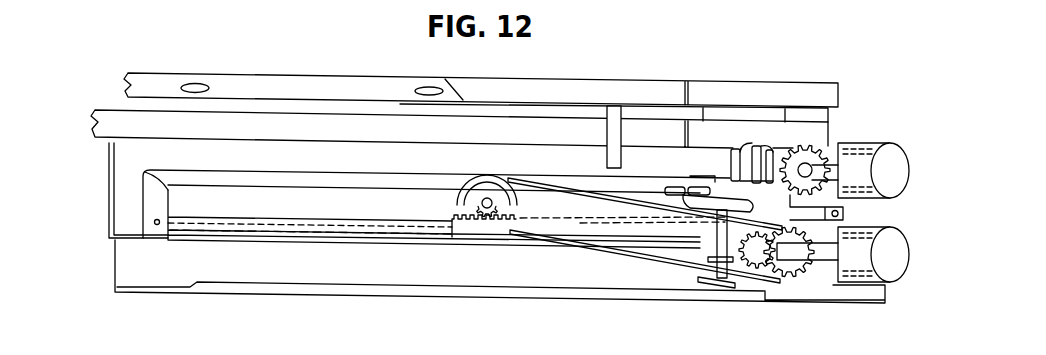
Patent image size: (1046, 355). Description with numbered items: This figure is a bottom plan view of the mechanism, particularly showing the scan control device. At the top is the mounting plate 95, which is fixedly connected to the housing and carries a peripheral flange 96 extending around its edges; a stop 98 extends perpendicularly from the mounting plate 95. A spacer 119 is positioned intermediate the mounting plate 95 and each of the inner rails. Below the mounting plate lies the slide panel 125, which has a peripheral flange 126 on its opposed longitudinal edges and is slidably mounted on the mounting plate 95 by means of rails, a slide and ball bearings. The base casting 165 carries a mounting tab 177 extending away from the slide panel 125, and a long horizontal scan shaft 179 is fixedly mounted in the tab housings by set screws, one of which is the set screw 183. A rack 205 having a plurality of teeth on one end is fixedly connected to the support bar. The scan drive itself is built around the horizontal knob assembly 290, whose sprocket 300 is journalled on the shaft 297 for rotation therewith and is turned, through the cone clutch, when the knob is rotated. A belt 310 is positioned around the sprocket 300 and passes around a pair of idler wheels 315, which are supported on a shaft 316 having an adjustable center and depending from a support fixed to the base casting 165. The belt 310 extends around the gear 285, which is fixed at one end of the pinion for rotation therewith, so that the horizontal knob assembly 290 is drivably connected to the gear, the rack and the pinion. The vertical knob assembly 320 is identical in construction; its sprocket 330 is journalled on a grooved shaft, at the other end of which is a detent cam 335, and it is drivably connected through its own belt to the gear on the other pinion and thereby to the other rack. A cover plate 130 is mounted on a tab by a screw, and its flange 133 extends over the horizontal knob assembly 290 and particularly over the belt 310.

The mounting plate 95 is at (544, 75).
The peripheral flange 96 is at (400, 88).
The stop 98 is at (608, 153).
The spacer 119 is at (738, 115).
The slide panel 125 is at (278, 144).
The peripheral flange 126 is at (372, 137).
The cover plate 130 is at (259, 296).
The flange 133 is at (172, 277).
The base casting 165 is at (343, 176).
The mounting tab 177 is at (162, 203).
The horizontal scan shaft 179 is at (347, 228).
The set screw 183 is at (155, 226).
The rack 205 is at (483, 228).
The gear 285 is at (457, 203).
The horizontal knob assembly 290 is at (943, 222).
The shaft 297 is at (797, 255).
The sprocket 300 is at (782, 276).
The belt 310 is at (642, 257).
The idler wheels 315 is at (708, 270).
The shaft 316 is at (716, 283).
The vertical knob assembly 320 is at (925, 120).
The sprocket 330 is at (828, 152).
The detent cam 335 is at (753, 143).